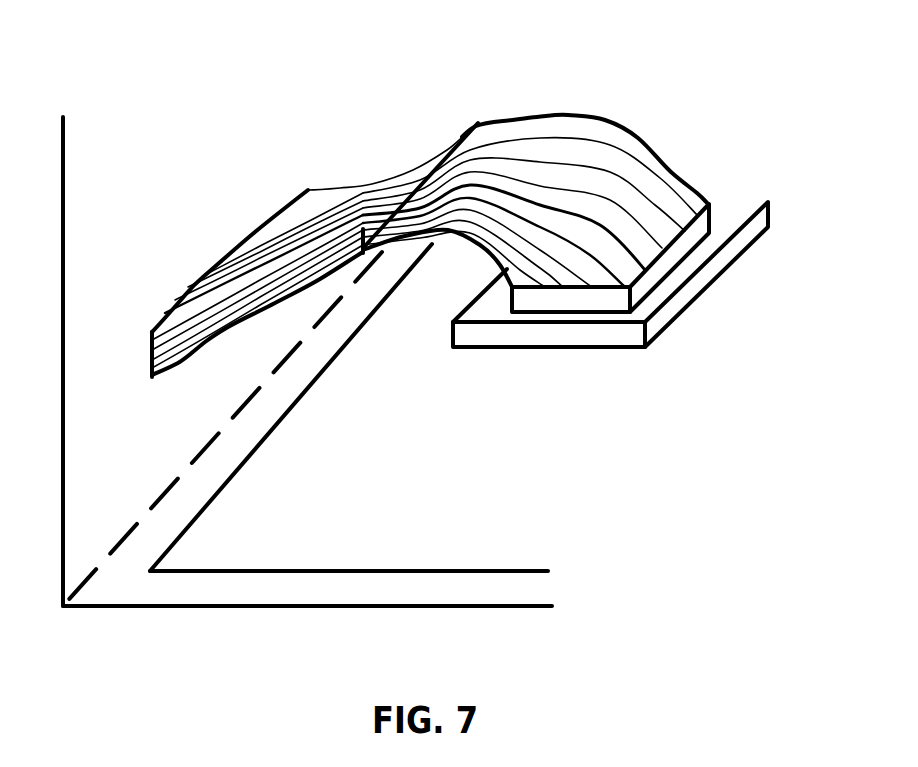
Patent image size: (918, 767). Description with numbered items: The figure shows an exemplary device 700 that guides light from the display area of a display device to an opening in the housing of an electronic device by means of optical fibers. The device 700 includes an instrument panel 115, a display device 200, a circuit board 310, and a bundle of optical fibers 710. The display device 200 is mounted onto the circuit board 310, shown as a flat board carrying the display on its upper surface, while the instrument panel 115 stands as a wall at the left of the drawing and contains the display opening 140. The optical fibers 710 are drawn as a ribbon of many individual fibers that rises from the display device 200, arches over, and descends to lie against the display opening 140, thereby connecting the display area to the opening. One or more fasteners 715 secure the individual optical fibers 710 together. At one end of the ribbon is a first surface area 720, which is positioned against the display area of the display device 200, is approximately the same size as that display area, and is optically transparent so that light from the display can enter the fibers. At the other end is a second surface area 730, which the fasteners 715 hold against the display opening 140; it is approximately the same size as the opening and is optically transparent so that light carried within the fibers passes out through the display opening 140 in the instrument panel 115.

The device 700 is at (258, 58).
The instrument panel 115 is at (72, 143).
The display opening 140 is at (203, 268).
The display device 200 is at (696, 307).
The circuit board 310 is at (504, 559).
The optical fibers 710 is at (372, 173).
The fasteners 715 is at (281, 215).
The first surface area 720 is at (711, 197).
The second surface area 730 is at (311, 184).